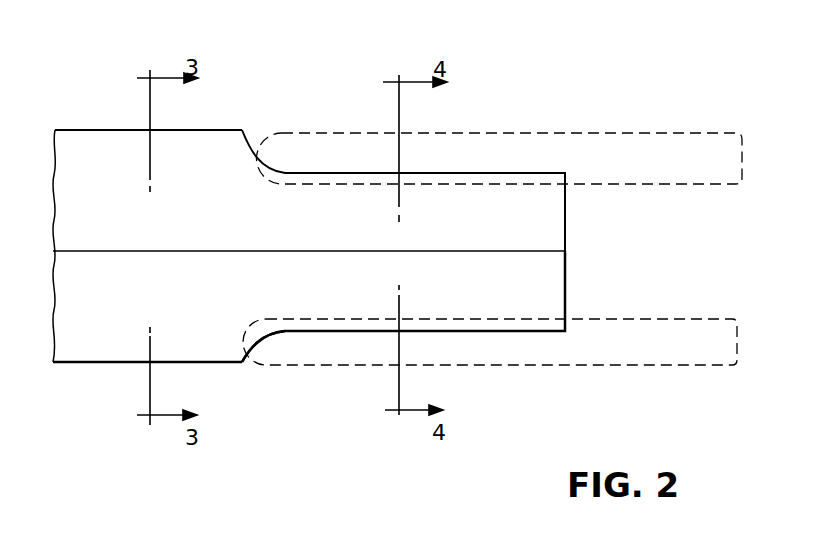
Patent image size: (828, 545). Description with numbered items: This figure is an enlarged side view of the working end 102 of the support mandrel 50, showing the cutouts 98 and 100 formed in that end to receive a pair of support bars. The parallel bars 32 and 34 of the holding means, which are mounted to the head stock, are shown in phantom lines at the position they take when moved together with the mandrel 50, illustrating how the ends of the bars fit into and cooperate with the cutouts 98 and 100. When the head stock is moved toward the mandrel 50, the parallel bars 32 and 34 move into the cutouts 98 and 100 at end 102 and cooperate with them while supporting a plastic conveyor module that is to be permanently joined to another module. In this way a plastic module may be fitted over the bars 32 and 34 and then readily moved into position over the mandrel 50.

The mandrel 50 is at (113, 329).
The cutout 98 is at (532, 153).
The cutout 100 is at (515, 347).
The end of mandrel 102 is at (222, 300).
The parallel bar 32 is at (650, 145).
The parallel bar 34 is at (630, 368).